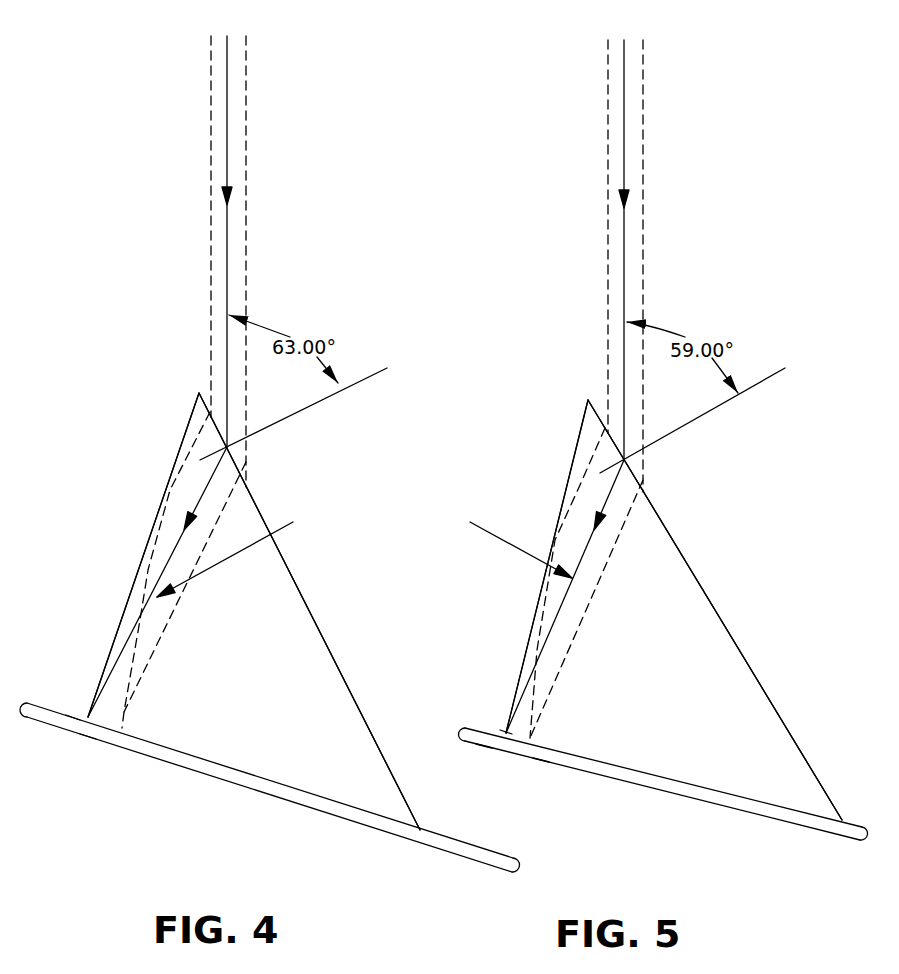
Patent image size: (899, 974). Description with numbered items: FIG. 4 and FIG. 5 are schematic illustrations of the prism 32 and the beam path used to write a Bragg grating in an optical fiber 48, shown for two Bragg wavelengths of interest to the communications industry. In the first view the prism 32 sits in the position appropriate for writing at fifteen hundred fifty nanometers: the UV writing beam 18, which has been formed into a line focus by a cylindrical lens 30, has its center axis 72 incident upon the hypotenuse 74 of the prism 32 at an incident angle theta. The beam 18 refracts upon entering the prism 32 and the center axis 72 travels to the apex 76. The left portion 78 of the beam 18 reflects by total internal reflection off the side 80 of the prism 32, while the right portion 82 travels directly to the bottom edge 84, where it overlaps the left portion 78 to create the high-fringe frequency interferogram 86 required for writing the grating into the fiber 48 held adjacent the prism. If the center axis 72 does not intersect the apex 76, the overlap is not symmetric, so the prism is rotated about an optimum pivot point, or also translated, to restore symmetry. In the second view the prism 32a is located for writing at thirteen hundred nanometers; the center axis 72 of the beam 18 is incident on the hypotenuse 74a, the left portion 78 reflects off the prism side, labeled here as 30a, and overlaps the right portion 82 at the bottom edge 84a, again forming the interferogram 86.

In FIG. 4, the UV writing beam 18 is at (268, 82).
In FIG. 5, the UV writing beam 18 is at (587, 84).
In FIG. 4, the UV writing beam center axis 72 is at (230, 248).
In FIG. 5, the UV writing beam center axis 72 is at (623, 253).
In FIG. 4, the hypotenuse of the prism 74 is at (311, 612).
In FIG. 5, the hypotenuse of the prism 74a is at (720, 610).
In FIG. 4, the apex of the prism 76 is at (72, 710).
In FIG. 5, the apex of the prism 76 is at (484, 739).
In FIG. 4, the left portion of the beam 78 is at (186, 428).
In FIG. 5, the left portion of the beam 78 is at (597, 445).
In FIG. 4, the side of the prism 80 is at (178, 461).
In FIG. 4, the right portion of the beam 82 is at (232, 513).
In FIG. 5, the right portion of the beam 82 is at (640, 512).
In FIG. 4, the bottom edge of the prism 84 is at (113, 716).
In FIG. 5, the bottom edge of the prism 84a is at (507, 718).
In FIG. 4, the high-fringe frequency interferogram 86 is at (88, 735).
In FIG. 4, the optical fiber 48 is at (448, 849).
In FIG. 5, the optical fiber 48 is at (760, 811).
In FIG. 4, the prism 32 is at (336, 773).
In FIG. 5, the prism 32a is at (745, 776).
In FIG. 5, the cylindrical lens 30 is at (541, 762).
In FIG. 5, the entrance face of prism 30a is at (571, 467).